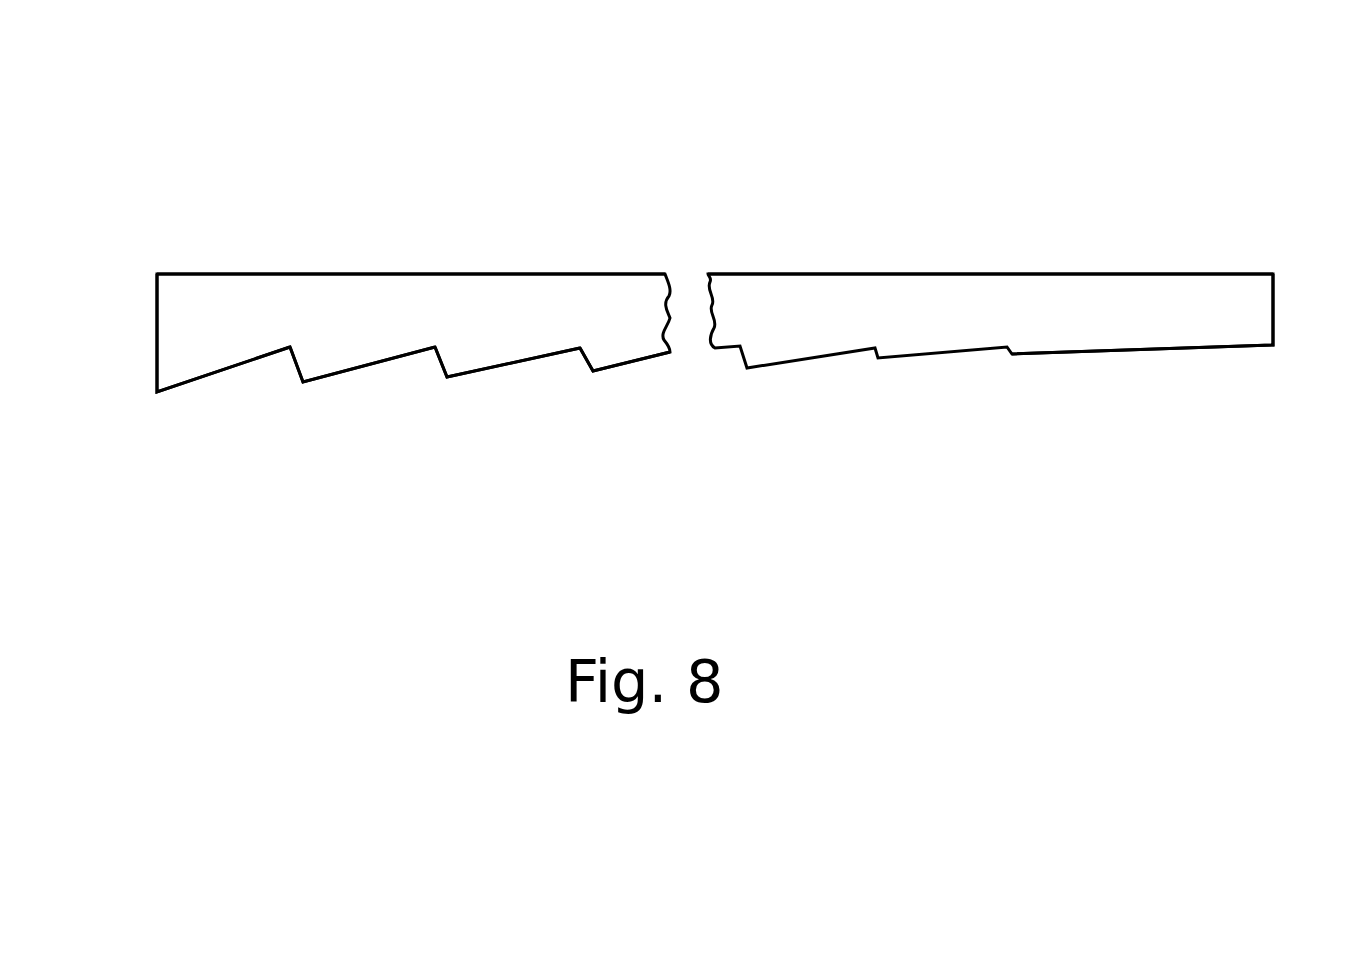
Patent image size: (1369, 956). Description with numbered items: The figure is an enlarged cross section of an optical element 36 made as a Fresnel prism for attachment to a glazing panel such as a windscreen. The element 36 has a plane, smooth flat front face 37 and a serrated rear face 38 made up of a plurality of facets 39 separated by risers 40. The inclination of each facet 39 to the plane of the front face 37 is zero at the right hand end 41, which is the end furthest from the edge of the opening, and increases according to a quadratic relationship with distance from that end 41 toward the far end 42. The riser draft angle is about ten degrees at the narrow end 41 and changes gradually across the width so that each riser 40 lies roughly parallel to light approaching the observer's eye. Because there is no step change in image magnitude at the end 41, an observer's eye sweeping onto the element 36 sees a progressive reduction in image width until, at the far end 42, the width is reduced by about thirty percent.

The optical element 36 is at (833, 197).
The front face 37 is at (467, 274).
The rear face 38 is at (573, 375).
The facet 39 is at (348, 372).
The riser 40 is at (437, 370).
The right hand end 41 is at (1276, 317).
The far end 42 is at (157, 315).